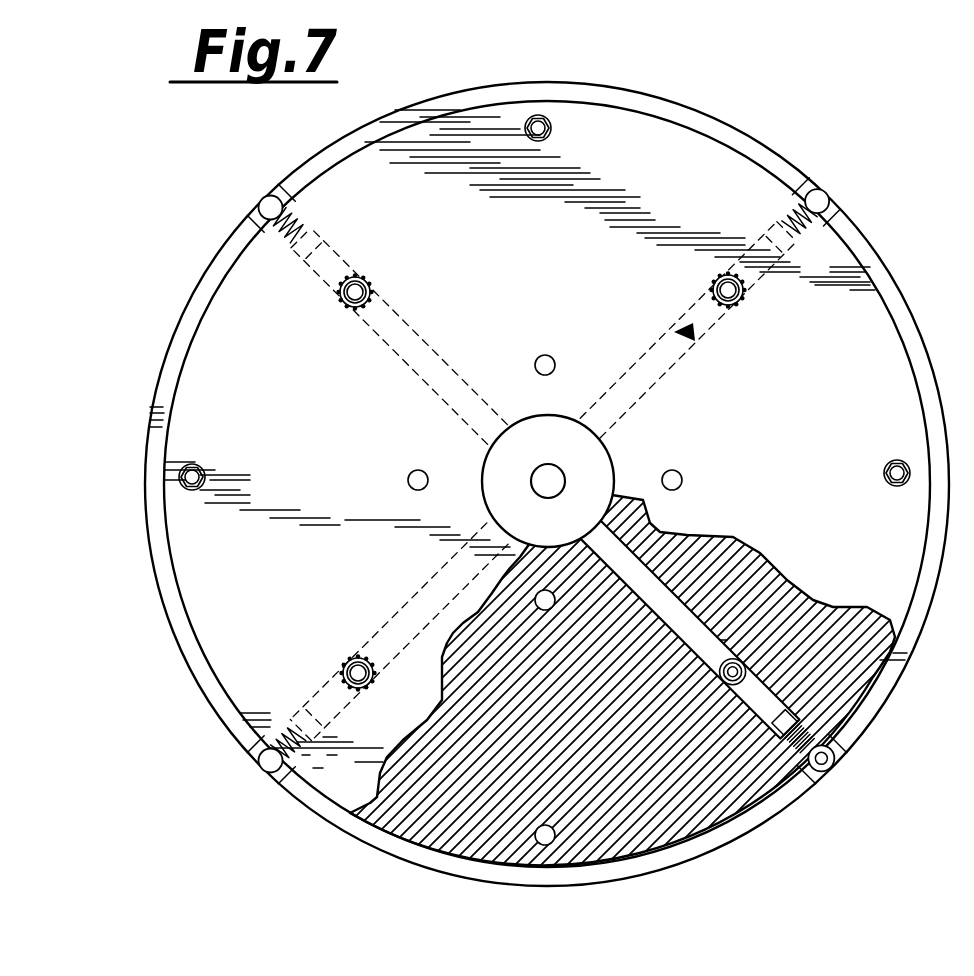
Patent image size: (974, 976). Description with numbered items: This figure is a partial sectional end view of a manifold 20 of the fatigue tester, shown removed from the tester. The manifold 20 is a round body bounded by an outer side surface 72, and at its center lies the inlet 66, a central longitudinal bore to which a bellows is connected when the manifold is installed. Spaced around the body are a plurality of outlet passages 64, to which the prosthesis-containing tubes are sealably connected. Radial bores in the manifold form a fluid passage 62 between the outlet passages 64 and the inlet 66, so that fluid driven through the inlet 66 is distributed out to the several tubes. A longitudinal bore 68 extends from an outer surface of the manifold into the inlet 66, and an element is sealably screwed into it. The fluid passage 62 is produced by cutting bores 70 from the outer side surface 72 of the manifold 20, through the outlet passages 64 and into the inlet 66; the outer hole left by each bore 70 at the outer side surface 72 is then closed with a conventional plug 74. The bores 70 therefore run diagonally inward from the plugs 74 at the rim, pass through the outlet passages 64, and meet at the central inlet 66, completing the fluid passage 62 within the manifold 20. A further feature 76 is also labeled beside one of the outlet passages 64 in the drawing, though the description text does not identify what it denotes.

The manifold 20 is at (757, 142).
The fluid passage 62 is at (698, 331).
The outlet passages 64 is at (357, 287).
The inlet 66 is at (498, 467).
The longitudinal bore 68 is at (550, 475).
The bores 70 is at (403, 334).
The outer side surface 72 is at (183, 305).
The plug 74 is at (264, 196).
The washer 76 is at (338, 297).